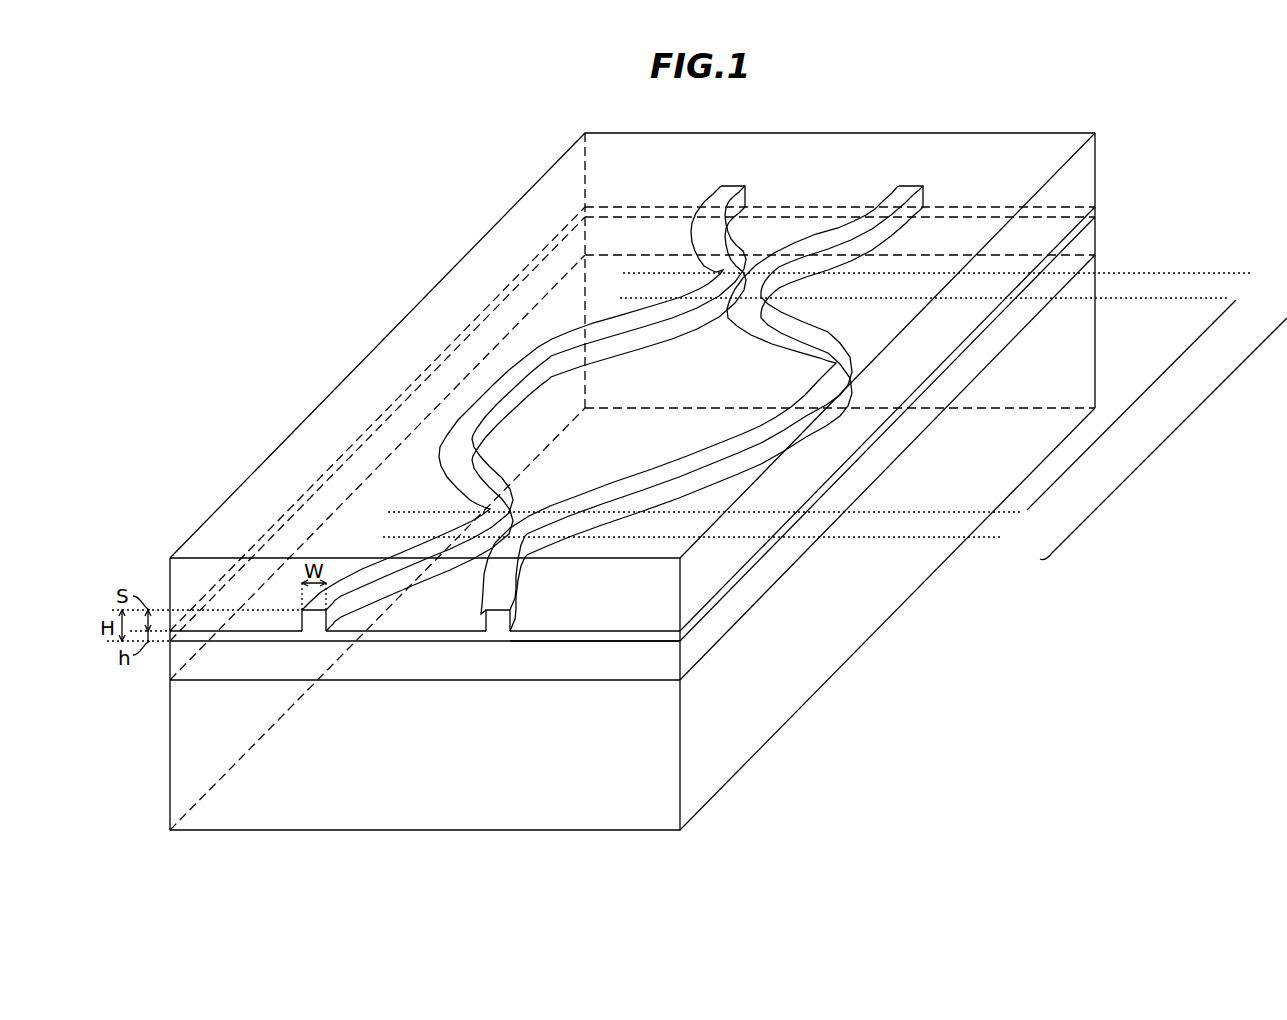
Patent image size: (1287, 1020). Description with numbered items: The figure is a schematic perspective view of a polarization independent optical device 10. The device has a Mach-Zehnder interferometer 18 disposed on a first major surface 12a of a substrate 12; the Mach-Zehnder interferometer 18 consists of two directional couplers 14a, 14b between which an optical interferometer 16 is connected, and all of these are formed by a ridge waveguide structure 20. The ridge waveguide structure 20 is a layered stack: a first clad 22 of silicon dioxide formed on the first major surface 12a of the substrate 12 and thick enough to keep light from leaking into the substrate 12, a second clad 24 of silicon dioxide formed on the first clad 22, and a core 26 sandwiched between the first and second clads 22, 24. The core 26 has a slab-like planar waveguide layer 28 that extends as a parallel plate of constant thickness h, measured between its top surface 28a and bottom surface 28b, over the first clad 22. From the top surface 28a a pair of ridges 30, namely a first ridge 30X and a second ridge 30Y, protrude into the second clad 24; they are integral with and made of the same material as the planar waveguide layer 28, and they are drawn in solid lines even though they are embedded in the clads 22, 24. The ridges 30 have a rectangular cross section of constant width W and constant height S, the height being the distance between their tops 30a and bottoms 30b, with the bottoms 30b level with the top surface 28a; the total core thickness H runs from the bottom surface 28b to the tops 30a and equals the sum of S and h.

The polarization independent optical device 10 is at (466, 151).
The substrate 12 is at (820, 669).
The first major surface 12a is at (769, 583).
The directional coupler 14a is at (1023, 512).
The directional coupler 14b is at (1253, 273).
The optical interferometer 16 is at (1128, 412).
The Mach-Zehnder interferometer 18 is at (1178, 437).
The ridge waveguide structure 20 is at (1237, 145).
The first clad 22 is at (1087, 243).
The second clad 24 is at (1087, 196).
The core 26 is at (1193, 123).
The planar waveguide layer 28 is at (1067, 235).
The top surface 28a is at (629, 624).
The bottom surface 28b is at (578, 650).
The ridges 30 is at (748, 366).
The first ridge 30X is at (913, 187).
The second ridge 30Y is at (730, 187).
The tops 30a is at (498, 598).
The bottoms 30b is at (321, 633).